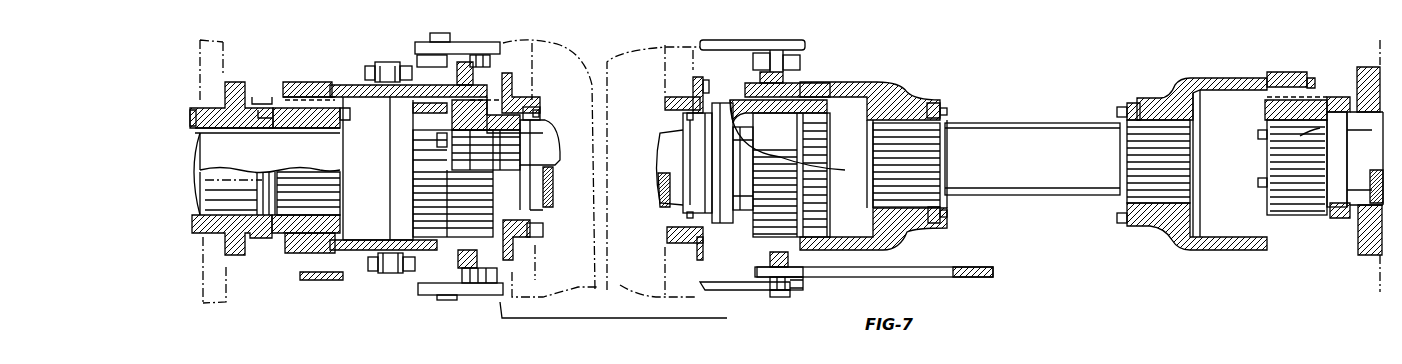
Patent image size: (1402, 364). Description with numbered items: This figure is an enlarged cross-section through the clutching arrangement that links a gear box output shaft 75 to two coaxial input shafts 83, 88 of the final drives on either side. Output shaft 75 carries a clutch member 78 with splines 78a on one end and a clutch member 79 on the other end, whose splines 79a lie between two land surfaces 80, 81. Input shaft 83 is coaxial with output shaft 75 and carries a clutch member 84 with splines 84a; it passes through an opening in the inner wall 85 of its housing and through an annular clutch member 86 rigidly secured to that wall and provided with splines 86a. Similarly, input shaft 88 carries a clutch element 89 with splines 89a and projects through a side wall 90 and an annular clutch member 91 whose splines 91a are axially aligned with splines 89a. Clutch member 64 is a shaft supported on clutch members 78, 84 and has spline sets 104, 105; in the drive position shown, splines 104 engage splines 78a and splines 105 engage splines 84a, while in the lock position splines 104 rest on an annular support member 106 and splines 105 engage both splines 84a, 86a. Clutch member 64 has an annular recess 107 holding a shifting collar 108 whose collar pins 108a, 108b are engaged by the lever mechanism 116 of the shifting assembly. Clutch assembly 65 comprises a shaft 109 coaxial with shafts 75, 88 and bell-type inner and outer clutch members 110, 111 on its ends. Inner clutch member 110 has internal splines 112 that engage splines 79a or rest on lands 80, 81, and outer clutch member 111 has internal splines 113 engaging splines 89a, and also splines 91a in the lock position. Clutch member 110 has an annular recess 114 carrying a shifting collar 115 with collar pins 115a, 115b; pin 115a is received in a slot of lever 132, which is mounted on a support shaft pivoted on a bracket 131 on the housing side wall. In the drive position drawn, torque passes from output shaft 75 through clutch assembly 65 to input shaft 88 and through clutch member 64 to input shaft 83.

The clutch member 64 is at (357, 82).
The clutch assembly 65 is at (1008, 124).
The output shaft 75 is at (540, 148).
The clutch member 78 is at (457, 118).
The splines 78a is at (453, 177).
The clutch member 79 is at (830, 131).
The splines 79a is at (790, 186).
The land surface 80 is at (700, 108).
The land surface 81 is at (843, 82).
The input shaft 83 is at (237, 155).
The clutch member 84 is at (310, 118).
The splines 84a is at (295, 212).
The inner wall 85 is at (200, 70).
The annular clutch member 86 is at (192, 116).
The splines 86a is at (262, 97).
The input shaft 88 is at (1365, 195).
The clutch element 89 is at (1267, 112).
The splines 89a is at (1267, 173).
The side wall 90 is at (1368, 255).
The annular clutch member 91 is at (1365, 63).
The splines 91a is at (1330, 90).
The splined set 104 is at (487, 100).
The splined set 105 is at (293, 97).
The annular support member 106 is at (427, 190).
The annular recess 107 is at (500, 268).
The shifting collar 108 is at (473, 72).
The collar pin 108a is at (470, 295).
The collar pin 108b is at (473, 52).
The shaft 109 is at (1040, 164).
The inner clutch member 110 is at (897, 87).
The outer clutch member 111 is at (1185, 78).
The internal splines 112 is at (800, 82).
The internal splines 113 is at (1277, 90).
The annular recess 114 is at (763, 258).
The shifting collar 115 is at (760, 78).
The collar pin 115a is at (767, 280).
The collar pin 115b is at (800, 40).
The lever mechanism 116 is at (350, 280).
The bracket 131 is at (750, 293).
The lever 132 is at (937, 253).